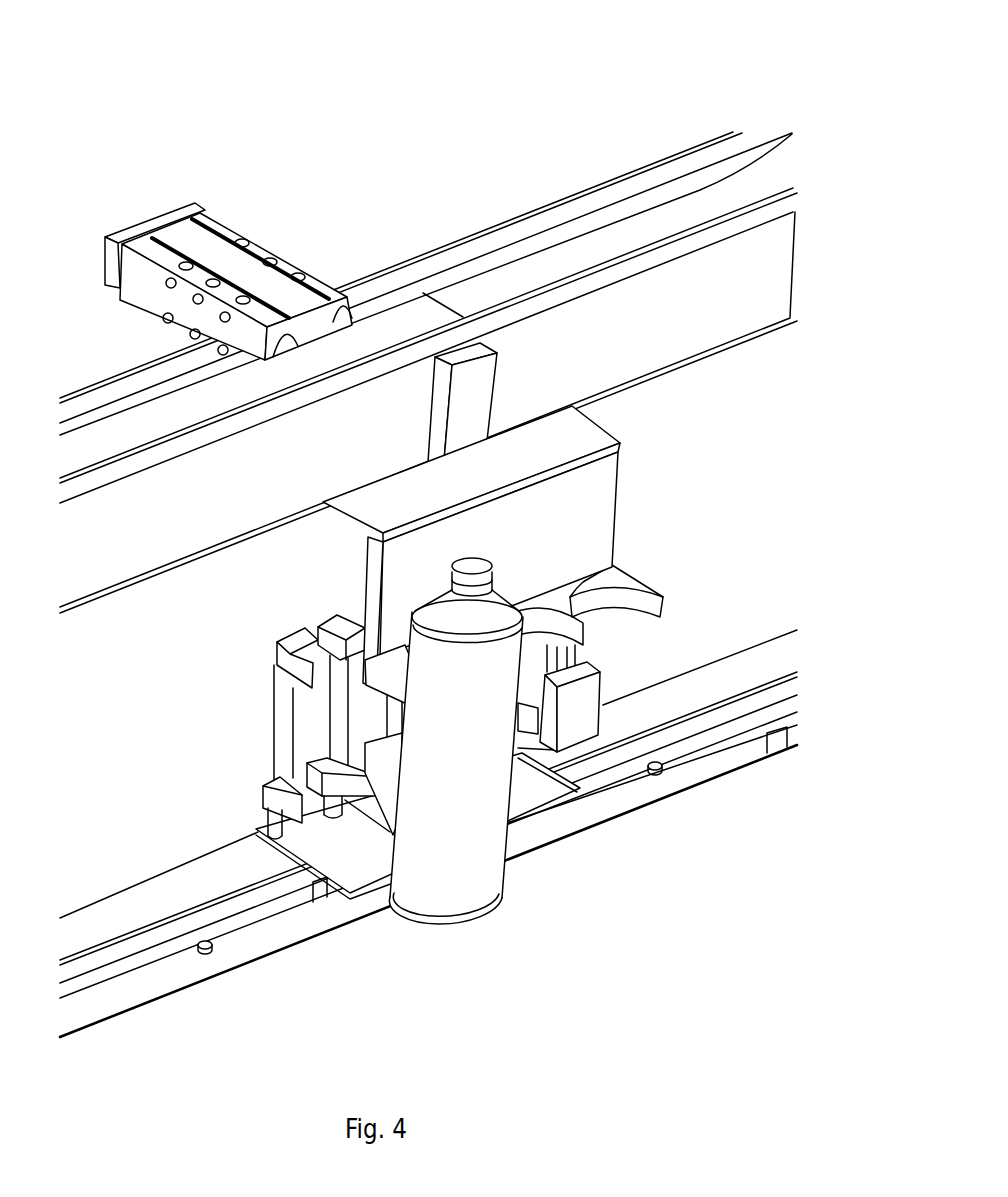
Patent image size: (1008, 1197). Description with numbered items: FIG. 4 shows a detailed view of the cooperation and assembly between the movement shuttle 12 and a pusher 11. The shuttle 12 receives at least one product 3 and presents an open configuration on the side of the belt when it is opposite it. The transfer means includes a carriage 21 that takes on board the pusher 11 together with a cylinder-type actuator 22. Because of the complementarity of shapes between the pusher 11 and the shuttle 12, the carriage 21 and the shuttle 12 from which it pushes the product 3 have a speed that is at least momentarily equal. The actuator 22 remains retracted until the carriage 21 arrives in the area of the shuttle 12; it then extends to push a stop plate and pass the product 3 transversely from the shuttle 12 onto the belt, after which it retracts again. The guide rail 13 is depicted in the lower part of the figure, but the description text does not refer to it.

The product 3 is at (453, 855).
The pusher 11 is at (535, 540).
The shuttle 12 is at (252, 738).
The guide rail 13 is at (765, 663).
The carriage 21 is at (466, 392).
The cylinder-type actuator 22 is at (277, 257).